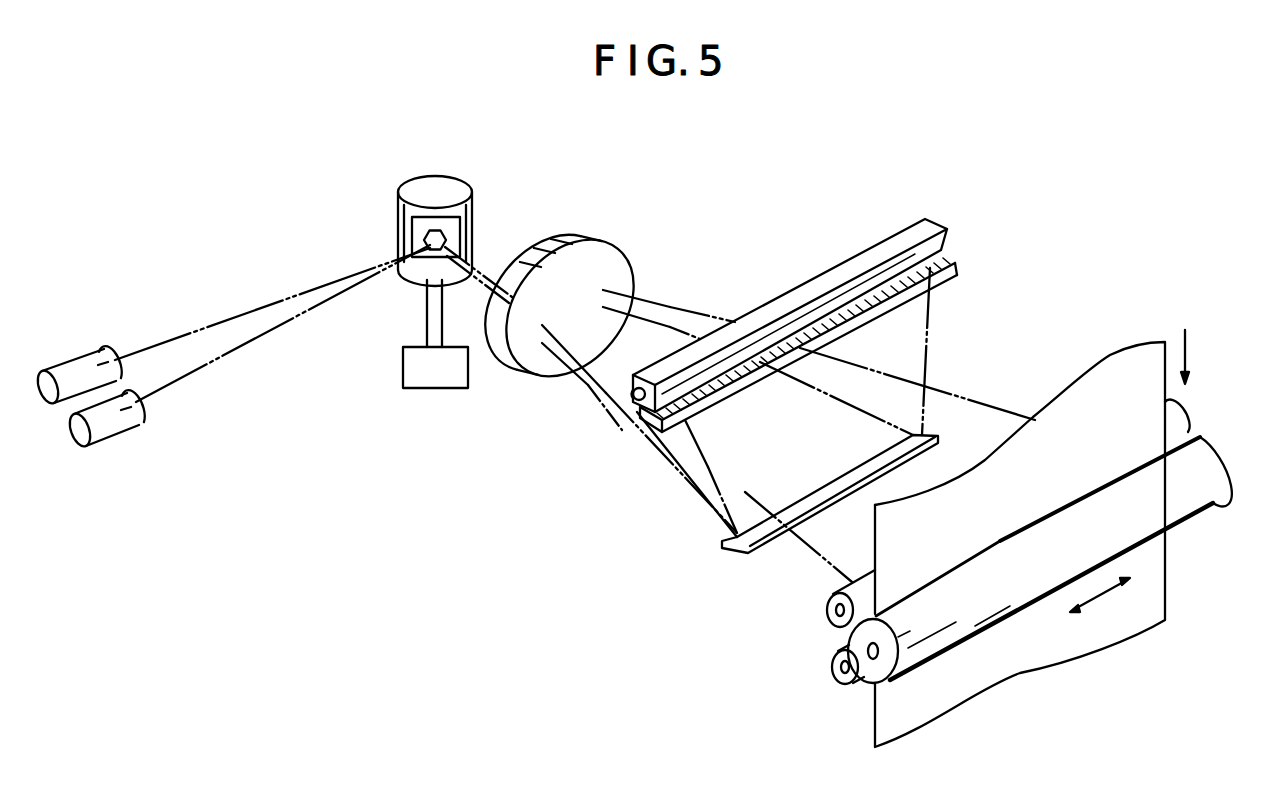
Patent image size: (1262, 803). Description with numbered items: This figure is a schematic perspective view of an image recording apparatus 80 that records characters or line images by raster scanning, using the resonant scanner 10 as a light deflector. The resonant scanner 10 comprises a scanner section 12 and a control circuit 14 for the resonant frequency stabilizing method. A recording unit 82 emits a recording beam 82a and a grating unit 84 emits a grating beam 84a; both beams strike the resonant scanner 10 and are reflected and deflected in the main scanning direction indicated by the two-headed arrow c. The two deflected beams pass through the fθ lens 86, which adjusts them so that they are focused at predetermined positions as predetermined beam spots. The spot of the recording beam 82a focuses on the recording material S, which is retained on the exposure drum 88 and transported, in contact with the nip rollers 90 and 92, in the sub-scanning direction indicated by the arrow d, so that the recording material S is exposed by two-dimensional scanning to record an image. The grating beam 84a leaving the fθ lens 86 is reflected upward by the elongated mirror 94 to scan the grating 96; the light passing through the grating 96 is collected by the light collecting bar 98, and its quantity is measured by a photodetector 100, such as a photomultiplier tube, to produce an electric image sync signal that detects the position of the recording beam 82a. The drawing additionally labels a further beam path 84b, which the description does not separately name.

The resonant scanner 10 is at (527, 214).
The scanner section 12 is at (428, 183).
The control circuit 14 is at (436, 380).
The image recording apparatus 80 is at (518, 450).
The recording unit 82 is at (118, 424).
The recording laser beam 82a is at (284, 326).
The grating unit 84 is at (84, 355).
The grating laser beam 84a is at (270, 302).
The reflected laser beam 84b is at (934, 347).
The fθ lens 86 is at (612, 260).
The exposure drum 88 is at (863, 688).
The nip roller 90 is at (827, 604).
The nip roller 92 is at (832, 664).
The elongated mirror 94 is at (740, 548).
The grating 96 is at (962, 272).
The light collecting bar 98 is at (872, 250).
The photodetector 100 is at (633, 410).
The recording material S is at (1127, 362).
The main scanning direction c is at (1100, 604).
The sub-scanning direction d is at (1194, 357).